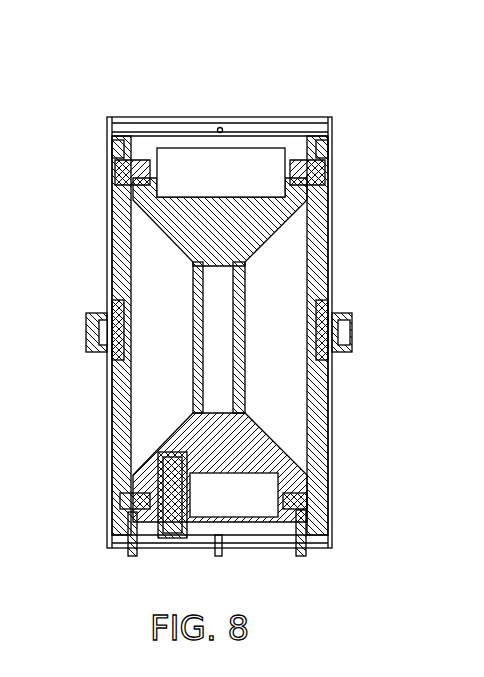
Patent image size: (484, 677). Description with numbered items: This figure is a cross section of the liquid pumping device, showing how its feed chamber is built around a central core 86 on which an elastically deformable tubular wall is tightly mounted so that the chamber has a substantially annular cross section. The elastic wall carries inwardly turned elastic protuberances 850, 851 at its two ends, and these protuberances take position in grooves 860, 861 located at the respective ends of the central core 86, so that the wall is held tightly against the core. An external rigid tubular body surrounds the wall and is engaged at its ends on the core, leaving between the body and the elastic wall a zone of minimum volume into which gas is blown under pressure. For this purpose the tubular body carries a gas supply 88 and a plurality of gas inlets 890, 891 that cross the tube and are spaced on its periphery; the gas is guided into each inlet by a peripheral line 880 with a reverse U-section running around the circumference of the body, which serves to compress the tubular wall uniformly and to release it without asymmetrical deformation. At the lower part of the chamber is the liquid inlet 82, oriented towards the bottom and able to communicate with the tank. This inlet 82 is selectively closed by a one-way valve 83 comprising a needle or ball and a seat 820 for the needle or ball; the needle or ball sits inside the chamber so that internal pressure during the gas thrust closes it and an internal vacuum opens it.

The liquid inlet 82 is at (178, 540).
The one-way valve 83 is at (190, 499).
The central core 86 is at (250, 300).
The gas supply 88 is at (352, 345).
The seat 820 is at (158, 540).
The elastic protuberance 850 is at (288, 155).
The elastic protuberance 851 is at (135, 500).
The groove 860 is at (175, 155).
The groove 861 is at (300, 499).
The peripheral line 880 is at (86, 335).
The gas inlet 890 is at (328, 310).
The gas inlet 891 is at (112, 308).